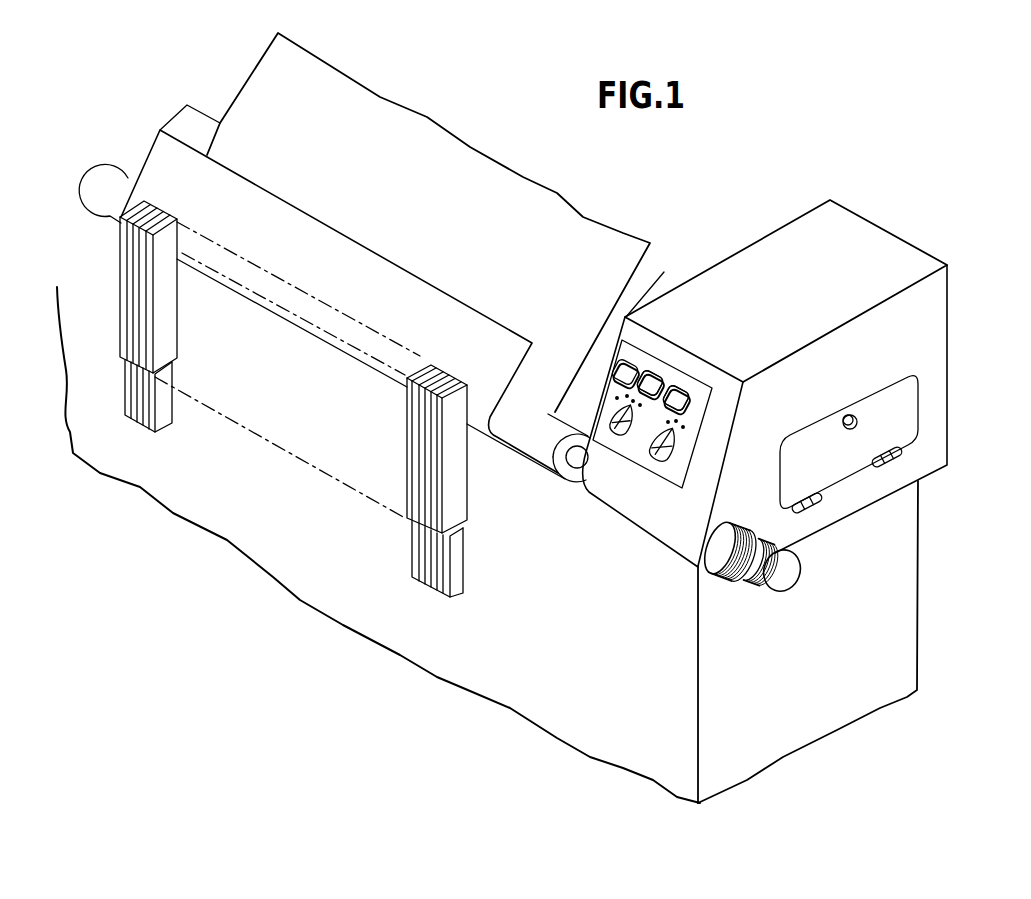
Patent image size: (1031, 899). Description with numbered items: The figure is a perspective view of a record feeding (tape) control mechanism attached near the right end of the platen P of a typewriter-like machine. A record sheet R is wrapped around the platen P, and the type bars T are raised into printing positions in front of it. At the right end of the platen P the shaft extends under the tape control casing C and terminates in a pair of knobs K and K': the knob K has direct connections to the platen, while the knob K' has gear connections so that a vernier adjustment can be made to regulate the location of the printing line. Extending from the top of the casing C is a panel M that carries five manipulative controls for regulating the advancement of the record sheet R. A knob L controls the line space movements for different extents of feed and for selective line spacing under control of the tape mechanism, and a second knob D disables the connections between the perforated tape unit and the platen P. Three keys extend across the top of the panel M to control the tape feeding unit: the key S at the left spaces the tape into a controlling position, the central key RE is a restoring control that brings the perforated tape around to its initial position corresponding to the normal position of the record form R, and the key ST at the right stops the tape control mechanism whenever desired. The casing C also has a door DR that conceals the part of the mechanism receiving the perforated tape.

The record sheet R is at (433, 312).
The space key S is at (633, 357).
The restoring key RE is at (650, 385).
The stop key ST is at (688, 404).
The panel M is at (692, 442).
The tape control casing C is at (917, 308).
The door DR is at (897, 403).
The platen P is at (537, 447).
The type bars T is at (460, 540).
The line space knob L is at (608, 436).
The disabling knob D is at (652, 463).
The vernier knob K' is at (731, 588).
The platen knob K is at (774, 602).